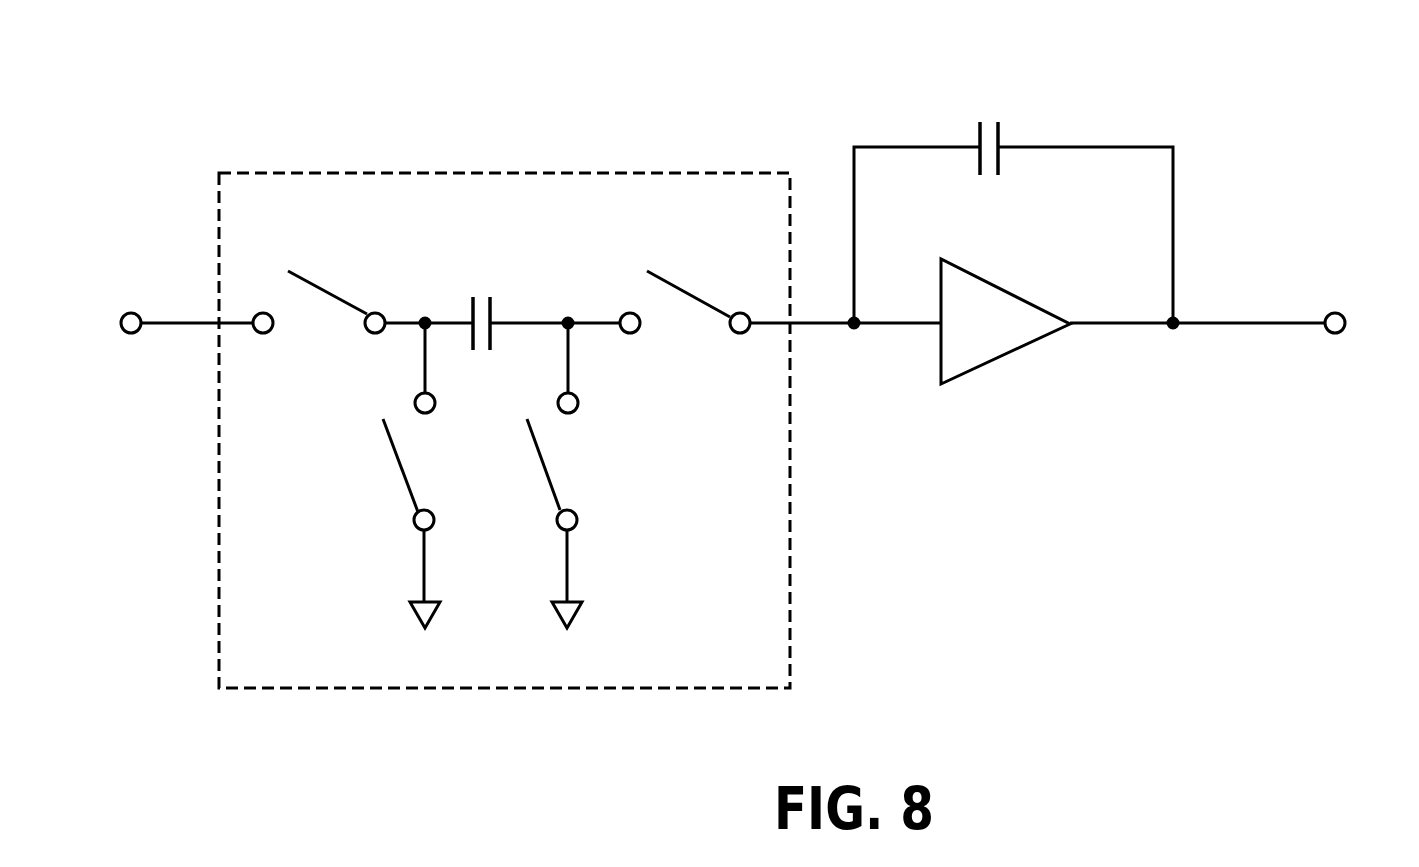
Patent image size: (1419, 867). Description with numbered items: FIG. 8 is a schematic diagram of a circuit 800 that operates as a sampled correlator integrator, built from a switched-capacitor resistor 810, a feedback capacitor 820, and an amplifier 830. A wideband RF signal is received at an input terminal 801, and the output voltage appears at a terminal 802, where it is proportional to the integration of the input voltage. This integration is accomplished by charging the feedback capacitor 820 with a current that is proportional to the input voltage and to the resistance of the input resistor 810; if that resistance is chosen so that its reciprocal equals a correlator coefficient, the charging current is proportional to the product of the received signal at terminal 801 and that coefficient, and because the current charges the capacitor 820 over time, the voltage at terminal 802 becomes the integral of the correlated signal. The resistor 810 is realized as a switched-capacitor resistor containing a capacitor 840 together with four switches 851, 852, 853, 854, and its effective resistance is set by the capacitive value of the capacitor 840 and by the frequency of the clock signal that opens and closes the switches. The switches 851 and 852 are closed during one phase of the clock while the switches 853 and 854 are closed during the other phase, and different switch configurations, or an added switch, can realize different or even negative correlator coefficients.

The circuit 800 is at (738, 370).
The terminal 801 is at (130, 313).
The terminal 802 is at (1343, 313).
The switched-capacitor resistor 810 is at (477, 172).
The capacitor 820 is at (988, 115).
The amplifier 830 is at (980, 368).
The capacitor 840 is at (480, 292).
The switch 851 is at (333, 282).
The switch 852 is at (545, 470).
The switch 853 is at (398, 468).
The switch 854 is at (690, 288).